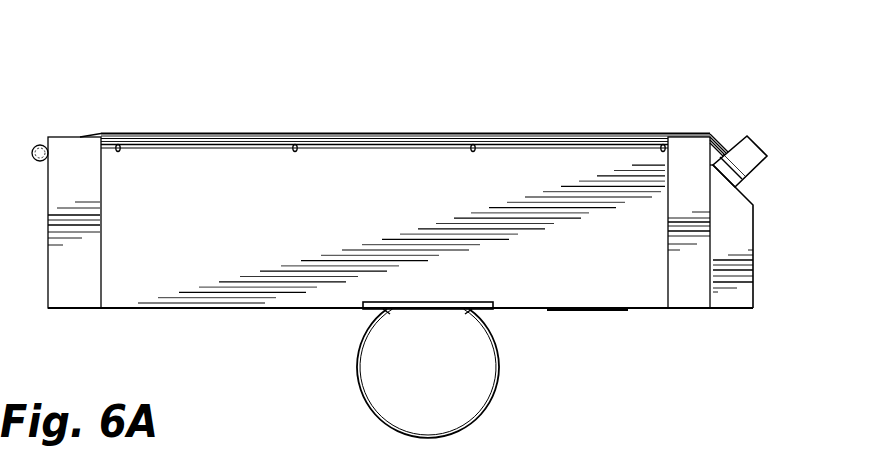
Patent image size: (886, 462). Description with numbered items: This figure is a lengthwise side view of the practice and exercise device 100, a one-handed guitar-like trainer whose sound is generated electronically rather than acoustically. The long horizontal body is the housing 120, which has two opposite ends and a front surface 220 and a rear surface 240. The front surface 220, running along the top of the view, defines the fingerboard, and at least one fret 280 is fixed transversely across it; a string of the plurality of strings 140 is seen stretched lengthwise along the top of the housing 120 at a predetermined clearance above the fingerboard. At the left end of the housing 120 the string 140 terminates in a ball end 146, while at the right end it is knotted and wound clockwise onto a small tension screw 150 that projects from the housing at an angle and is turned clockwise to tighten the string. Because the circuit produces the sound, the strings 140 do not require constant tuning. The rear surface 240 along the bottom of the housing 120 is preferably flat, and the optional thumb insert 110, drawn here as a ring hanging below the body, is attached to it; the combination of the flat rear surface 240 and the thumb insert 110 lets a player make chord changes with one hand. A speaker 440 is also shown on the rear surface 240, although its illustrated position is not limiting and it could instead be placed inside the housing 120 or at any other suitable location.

The practice and exercise device 100 is at (248, 119).
The thumb insert 110 is at (493, 408).
The housing 120 is at (216, 246).
The strings 140 is at (414, 133).
The ball end 146 is at (33, 143).
The tension screw 150 is at (763, 138).
The front surface 220 is at (226, 149).
The rear surface 240 is at (310, 310).
The fret 280 is at (472, 151).
The speaker 440 is at (593, 312).